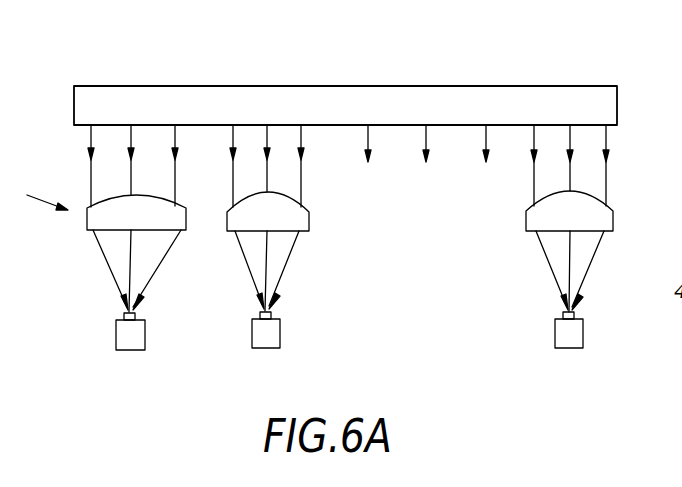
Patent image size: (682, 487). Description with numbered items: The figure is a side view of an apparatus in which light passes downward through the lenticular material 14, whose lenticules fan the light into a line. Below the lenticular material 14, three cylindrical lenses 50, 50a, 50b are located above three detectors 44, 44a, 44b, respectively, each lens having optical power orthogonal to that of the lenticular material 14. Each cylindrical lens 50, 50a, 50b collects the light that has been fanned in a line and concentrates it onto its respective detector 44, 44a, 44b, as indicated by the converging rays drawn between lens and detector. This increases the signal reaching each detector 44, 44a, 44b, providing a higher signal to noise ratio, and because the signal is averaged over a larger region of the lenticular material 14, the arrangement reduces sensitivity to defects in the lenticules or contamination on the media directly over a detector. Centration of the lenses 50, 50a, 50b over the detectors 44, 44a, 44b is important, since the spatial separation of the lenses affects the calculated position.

The lenticular material 14 is at (441, 90).
The cylindrical lens 50 is at (100, 218).
The cylindrical lens 50a is at (299, 218).
The cylindrical lens 50b is at (613, 212).
The detector 44 is at (131, 340).
The detector 44a is at (270, 335).
The detector 44b is at (563, 333).